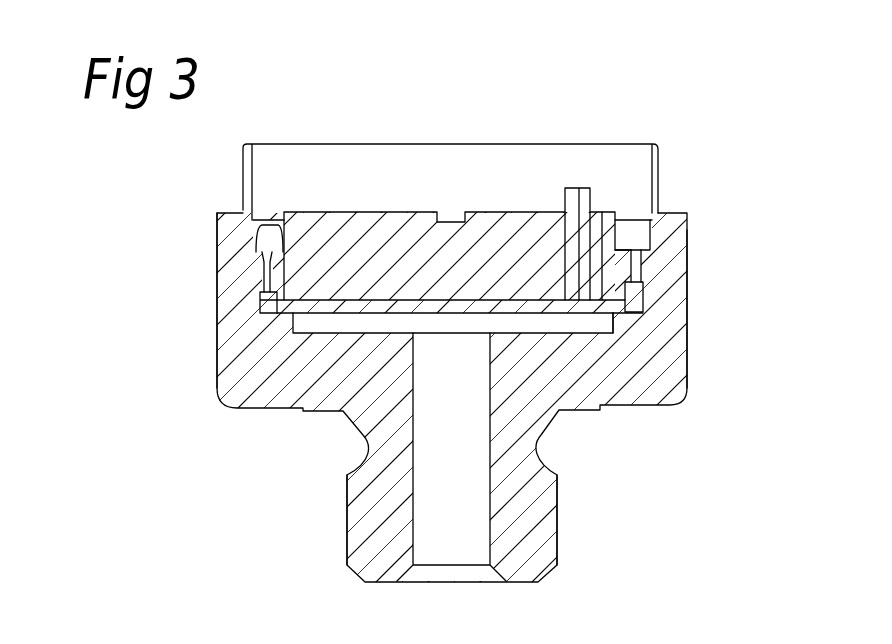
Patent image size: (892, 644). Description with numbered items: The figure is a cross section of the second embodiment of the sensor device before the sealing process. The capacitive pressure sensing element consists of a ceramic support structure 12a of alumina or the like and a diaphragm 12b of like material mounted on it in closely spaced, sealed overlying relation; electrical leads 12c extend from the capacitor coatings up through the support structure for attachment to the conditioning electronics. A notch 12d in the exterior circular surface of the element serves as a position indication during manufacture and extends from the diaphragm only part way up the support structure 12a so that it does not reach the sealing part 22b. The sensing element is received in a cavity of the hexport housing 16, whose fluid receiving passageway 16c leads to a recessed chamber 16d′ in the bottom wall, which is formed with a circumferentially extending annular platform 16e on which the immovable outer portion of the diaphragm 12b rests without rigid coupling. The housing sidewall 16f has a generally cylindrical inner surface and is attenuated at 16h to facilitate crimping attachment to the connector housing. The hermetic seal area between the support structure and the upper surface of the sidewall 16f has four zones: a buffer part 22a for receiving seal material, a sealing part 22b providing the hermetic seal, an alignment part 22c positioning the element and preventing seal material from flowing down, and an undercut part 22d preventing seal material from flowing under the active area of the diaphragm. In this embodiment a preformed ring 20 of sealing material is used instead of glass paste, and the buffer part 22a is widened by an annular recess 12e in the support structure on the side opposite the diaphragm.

The support structure 12a is at (300, 265).
The diaphragm 12b is at (228, 360).
The electrical leads 12c is at (582, 197).
The notch 12d is at (634, 304).
The annular recess 12e is at (627, 237).
The hexport housing 16 is at (640, 370).
The fluid receiving passageway 16c is at (470, 457).
The recessed chamber 16d′ is at (565, 320).
The annular platform 16e is at (615, 310).
The sidewall 16f is at (660, 300).
The attenuated wall portion 16h is at (658, 158).
The preformed ring 20 is at (650, 245).
The buffer part 22a is at (645, 253).
The sealing part 22b is at (648, 270).
The alignment part 22c is at (265, 278).
The undercut part 22d is at (262, 303).